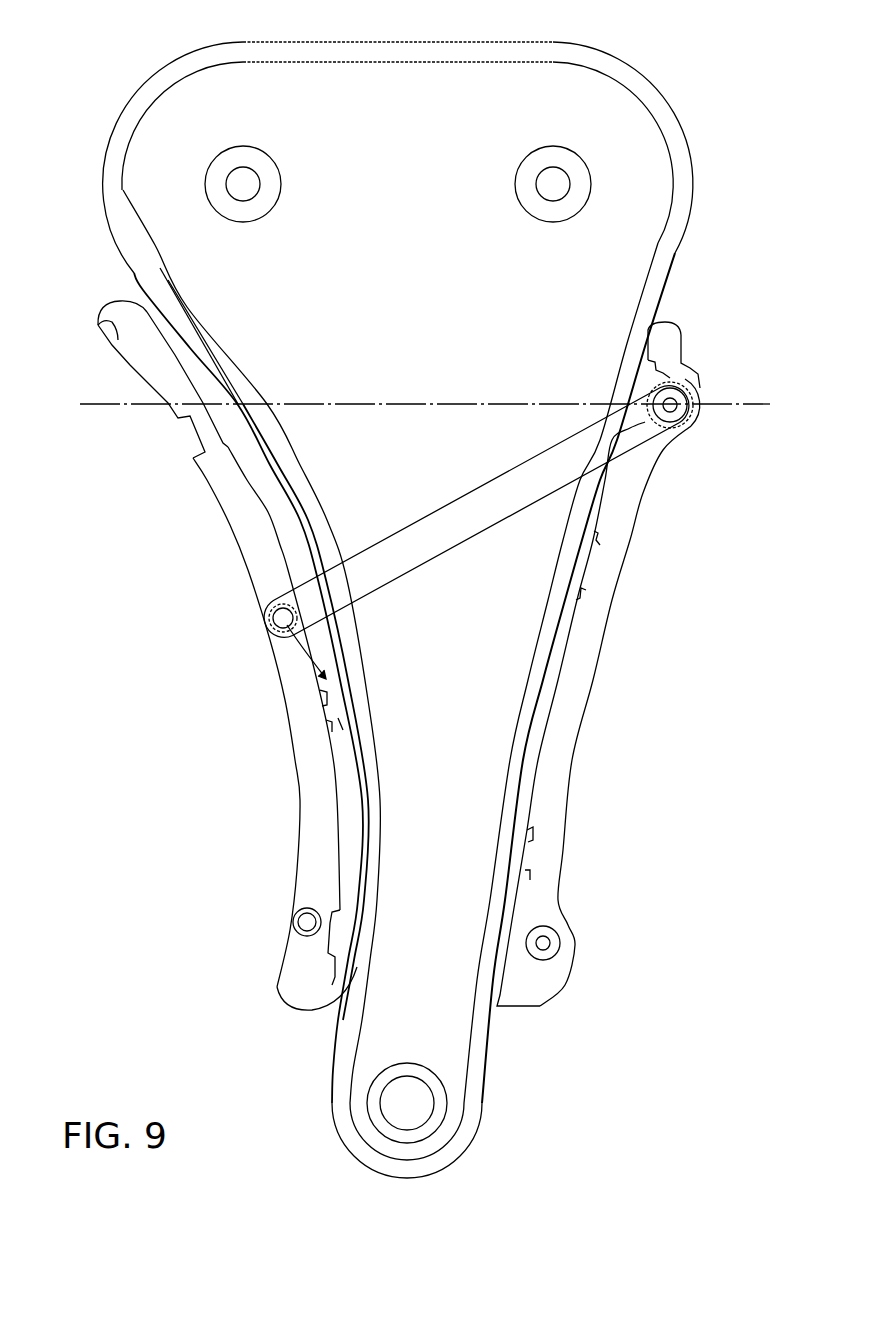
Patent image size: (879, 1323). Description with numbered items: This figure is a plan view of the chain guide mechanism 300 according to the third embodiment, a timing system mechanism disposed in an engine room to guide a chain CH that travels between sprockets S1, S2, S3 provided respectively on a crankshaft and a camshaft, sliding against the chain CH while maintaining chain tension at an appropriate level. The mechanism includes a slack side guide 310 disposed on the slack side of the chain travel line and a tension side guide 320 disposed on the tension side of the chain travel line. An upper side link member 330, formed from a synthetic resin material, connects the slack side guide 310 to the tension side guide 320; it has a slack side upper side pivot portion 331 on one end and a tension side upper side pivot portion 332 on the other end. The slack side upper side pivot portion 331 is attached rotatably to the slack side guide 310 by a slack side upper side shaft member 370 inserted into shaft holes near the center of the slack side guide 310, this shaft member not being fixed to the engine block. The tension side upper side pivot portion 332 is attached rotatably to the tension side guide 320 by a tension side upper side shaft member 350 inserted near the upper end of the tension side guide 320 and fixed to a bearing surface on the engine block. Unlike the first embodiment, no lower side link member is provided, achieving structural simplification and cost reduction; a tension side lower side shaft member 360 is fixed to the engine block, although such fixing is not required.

The chain guide mechanism 300 is at (100, 77).
The chain CH is at (672, 120).
The sprocket S1 is at (437, 1100).
The sprocket S2 is at (243, 165).
The sprocket S3 is at (553, 165).
The slack side guide 310 is at (318, 820).
The tension side guide 320 is at (592, 600).
The upper side link member 330 is at (578, 463).
The slack side upper side pivot portion 331 is at (275, 630).
The tension side upper side pivot portion 332 is at (668, 428).
The tension side upper side shaft member 350 is at (672, 385).
The tension side lower side shaft member 360 is at (545, 950).
The slack side upper side shaft member 370 is at (273, 614).